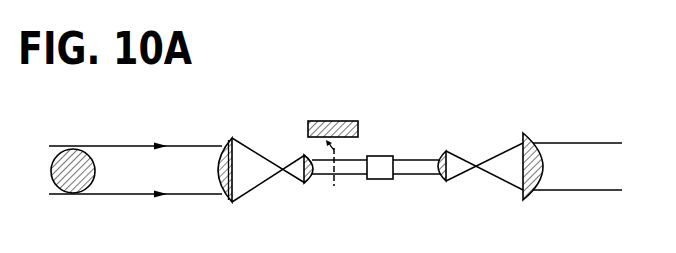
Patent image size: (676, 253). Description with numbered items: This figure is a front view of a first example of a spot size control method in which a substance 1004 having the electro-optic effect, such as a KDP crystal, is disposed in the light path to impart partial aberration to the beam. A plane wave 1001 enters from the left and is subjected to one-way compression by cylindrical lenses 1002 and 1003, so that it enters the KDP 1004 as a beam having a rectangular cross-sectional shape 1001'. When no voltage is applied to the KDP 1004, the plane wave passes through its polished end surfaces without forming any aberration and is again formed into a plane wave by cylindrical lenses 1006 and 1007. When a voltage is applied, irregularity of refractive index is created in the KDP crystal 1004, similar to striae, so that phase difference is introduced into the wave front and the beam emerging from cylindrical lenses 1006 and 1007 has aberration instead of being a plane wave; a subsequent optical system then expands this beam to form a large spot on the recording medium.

The plane wave 1001 is at (134, 158).
The rectangular cross-sectional shape 1001' is at (333, 125).
The cylindrical lens 1002 is at (227, 137).
The cylindrical lens 1003 is at (307, 183).
The substance having the electro-optic effect 1004 is at (381, 156).
The cylindrical lens 1006 is at (442, 181).
The cylindrical lens 1007 is at (525, 133).